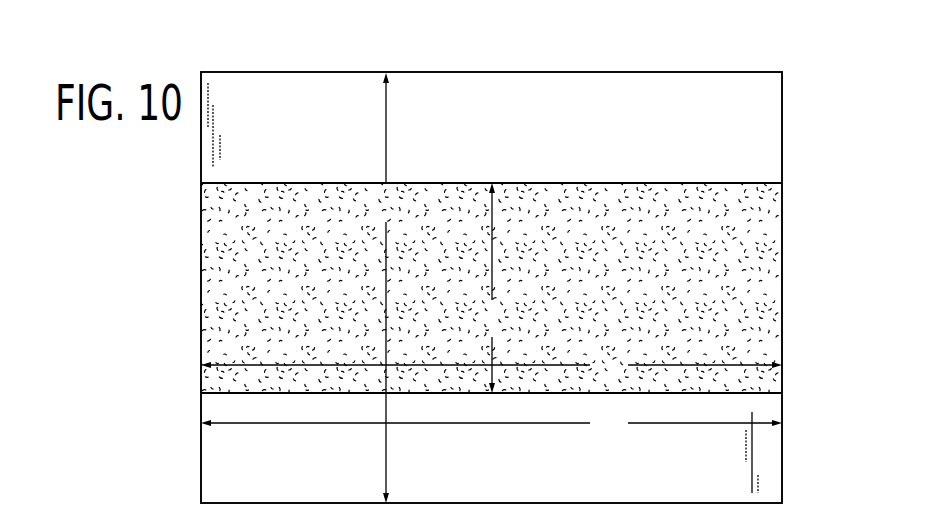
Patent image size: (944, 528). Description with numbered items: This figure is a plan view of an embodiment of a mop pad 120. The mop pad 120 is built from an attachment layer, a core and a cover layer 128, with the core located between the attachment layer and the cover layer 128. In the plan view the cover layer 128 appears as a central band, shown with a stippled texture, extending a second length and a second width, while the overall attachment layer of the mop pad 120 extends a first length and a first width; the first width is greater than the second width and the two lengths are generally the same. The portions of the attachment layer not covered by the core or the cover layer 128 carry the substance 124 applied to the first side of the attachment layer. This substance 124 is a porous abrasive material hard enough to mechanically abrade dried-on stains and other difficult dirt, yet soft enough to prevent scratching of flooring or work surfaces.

The mop pad 120 is at (226, 45).
The substance 124 is at (218, 438).
The cover layer 128 is at (218, 325).